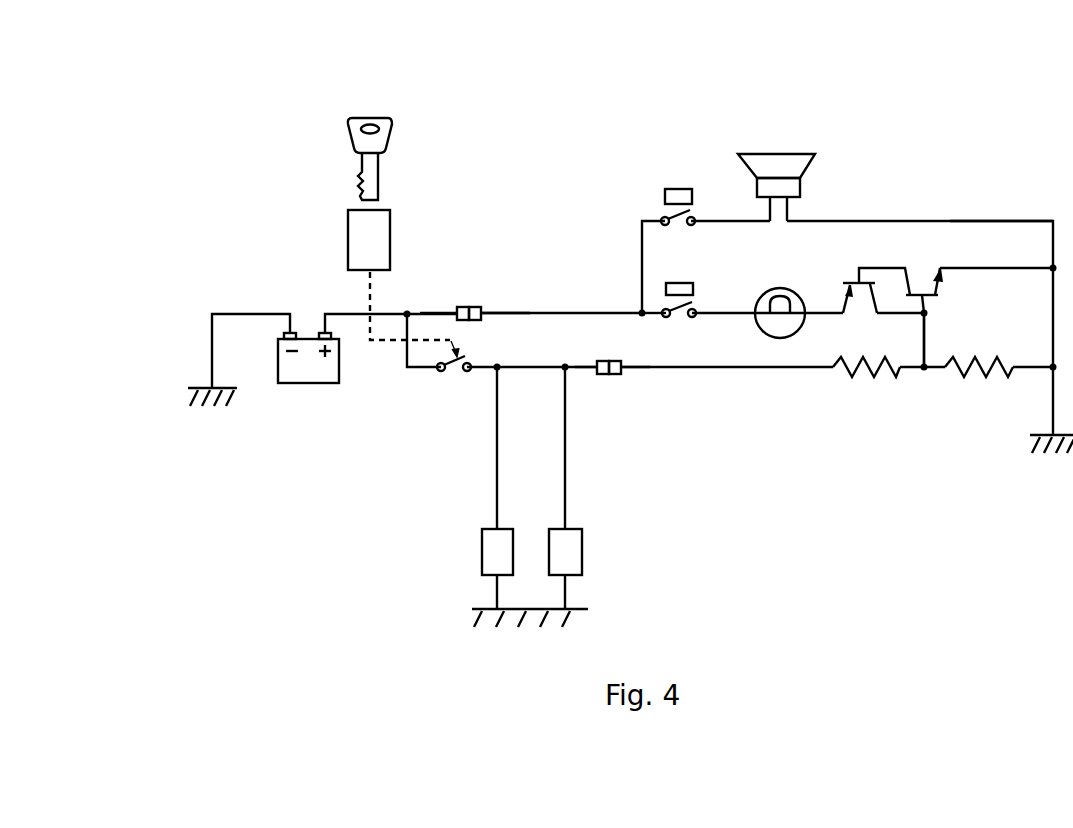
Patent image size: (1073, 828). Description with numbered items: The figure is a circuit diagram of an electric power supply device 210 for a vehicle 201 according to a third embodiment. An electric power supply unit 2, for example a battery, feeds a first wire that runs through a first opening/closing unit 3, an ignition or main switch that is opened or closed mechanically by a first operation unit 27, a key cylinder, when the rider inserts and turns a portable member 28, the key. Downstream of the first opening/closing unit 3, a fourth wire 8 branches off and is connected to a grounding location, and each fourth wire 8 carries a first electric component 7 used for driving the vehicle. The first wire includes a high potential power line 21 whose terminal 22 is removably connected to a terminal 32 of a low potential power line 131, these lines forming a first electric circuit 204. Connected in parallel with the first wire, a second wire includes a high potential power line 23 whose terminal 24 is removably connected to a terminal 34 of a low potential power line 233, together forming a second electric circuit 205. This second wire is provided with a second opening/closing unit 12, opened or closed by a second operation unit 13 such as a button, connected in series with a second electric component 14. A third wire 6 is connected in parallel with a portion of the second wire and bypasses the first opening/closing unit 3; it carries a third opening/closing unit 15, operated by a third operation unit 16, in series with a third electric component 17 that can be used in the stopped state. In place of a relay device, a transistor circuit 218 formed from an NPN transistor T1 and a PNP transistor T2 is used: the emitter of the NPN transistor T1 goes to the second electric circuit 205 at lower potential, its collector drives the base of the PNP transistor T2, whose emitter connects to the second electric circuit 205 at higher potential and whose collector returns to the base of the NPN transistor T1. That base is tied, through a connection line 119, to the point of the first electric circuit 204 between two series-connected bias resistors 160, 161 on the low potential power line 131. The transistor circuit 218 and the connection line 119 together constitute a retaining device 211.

The electric power supply unit 2 is at (305, 383).
The first opening/closing unit 3 is at (455, 375).
The third wire 6 is at (1019, 221).
The first electric component 7 is at (482, 555).
The fourth wire 8 is at (497, 485).
The second opening/closing unit 12 is at (680, 318).
The second operation unit 13 is at (693, 289).
The second electric component 14 is at (763, 330).
The third opening/closing unit 15 is at (693, 218).
The third operation unit 16 is at (678, 189).
The third electric component 17 is at (780, 154).
The high potential power line 21 is at (592, 375).
The terminal 22 is at (600, 361).
The high potential power line 23 is at (435, 312).
The terminal 24 is at (461, 307).
The first operation unit 27 is at (347, 238).
The portable member 28 is at (348, 128).
The terminal 32 is at (617, 361).
The terminal 34 is at (476, 307).
The connection line 119 is at (928, 345).
The low potential power line 131 is at (627, 375).
The bias resistor 160 is at (838, 378).
The bias resistor 161 is at (1000, 380).
The vehicle electrical system 201 is at (270, 178).
The first electric circuit 204 is at (657, 464).
The second electric circuit 205 is at (535, 200).
The electric power supply device 210 is at (584, 265).
The retaining device 211 is at (970, 490).
The transistor circuit 218 is at (912, 330).
The wire 233 is at (518, 312).
The NPN transistor T1 is at (924, 278).
The PNP transistor T2 is at (876, 301).